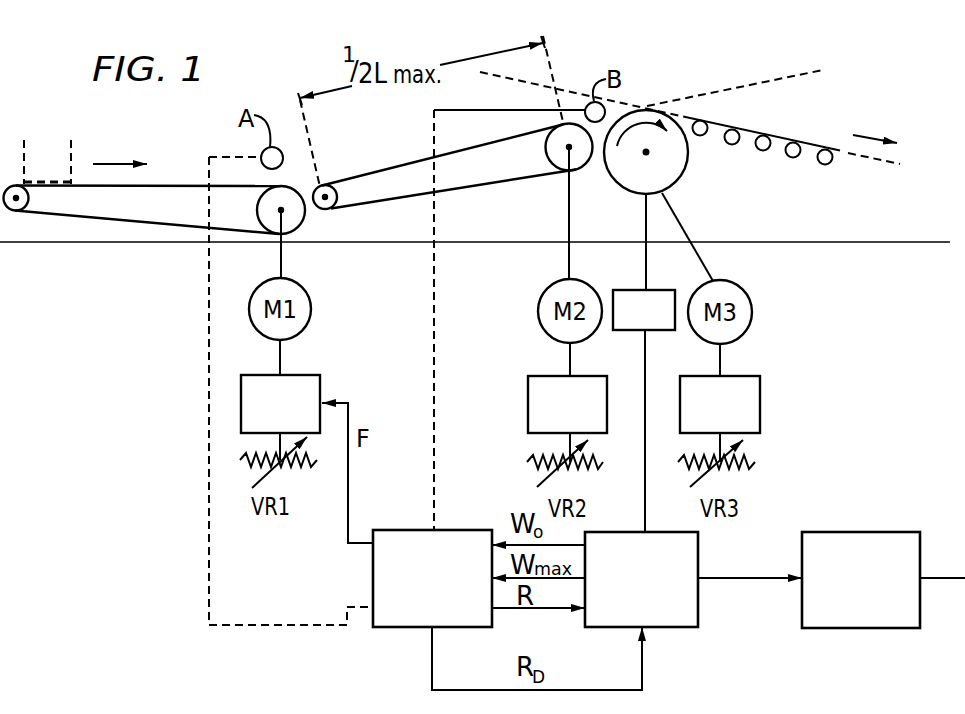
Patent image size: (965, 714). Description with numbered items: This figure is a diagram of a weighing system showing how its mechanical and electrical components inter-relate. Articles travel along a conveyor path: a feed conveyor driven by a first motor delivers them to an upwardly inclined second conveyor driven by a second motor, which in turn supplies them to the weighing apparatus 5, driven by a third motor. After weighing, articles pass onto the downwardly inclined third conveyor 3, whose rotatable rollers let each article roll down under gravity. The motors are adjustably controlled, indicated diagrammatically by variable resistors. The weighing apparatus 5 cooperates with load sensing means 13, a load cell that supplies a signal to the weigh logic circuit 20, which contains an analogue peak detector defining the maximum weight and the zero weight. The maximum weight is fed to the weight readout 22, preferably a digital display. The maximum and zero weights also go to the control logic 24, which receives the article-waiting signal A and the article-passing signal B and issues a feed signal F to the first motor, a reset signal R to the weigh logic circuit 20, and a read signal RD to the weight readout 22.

The third conveyor 3 is at (693, 112).
The weighing apparatus 5 is at (677, 166).
The load sensing means 13 is at (633, 323).
The weigh logic circuit 20 is at (628, 619).
The weight readout 22 is at (873, 619).
The control logic 24 is at (418, 619).